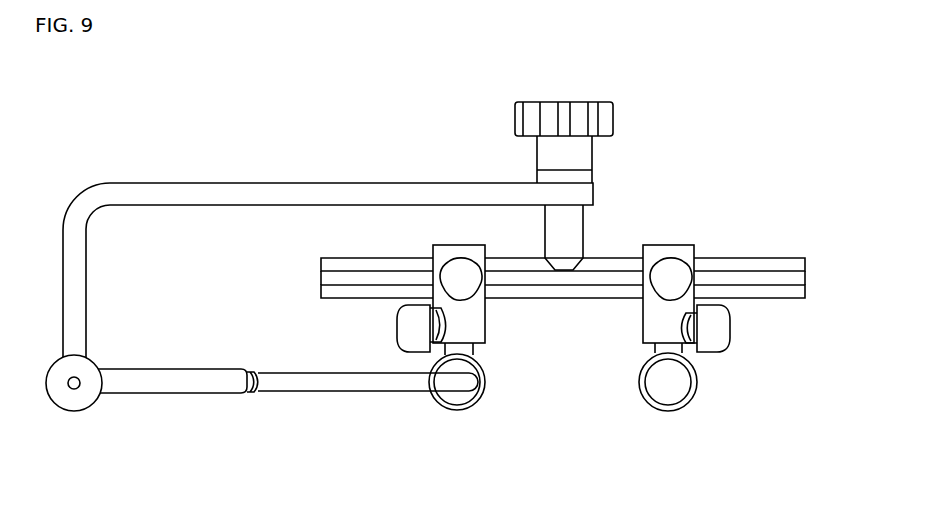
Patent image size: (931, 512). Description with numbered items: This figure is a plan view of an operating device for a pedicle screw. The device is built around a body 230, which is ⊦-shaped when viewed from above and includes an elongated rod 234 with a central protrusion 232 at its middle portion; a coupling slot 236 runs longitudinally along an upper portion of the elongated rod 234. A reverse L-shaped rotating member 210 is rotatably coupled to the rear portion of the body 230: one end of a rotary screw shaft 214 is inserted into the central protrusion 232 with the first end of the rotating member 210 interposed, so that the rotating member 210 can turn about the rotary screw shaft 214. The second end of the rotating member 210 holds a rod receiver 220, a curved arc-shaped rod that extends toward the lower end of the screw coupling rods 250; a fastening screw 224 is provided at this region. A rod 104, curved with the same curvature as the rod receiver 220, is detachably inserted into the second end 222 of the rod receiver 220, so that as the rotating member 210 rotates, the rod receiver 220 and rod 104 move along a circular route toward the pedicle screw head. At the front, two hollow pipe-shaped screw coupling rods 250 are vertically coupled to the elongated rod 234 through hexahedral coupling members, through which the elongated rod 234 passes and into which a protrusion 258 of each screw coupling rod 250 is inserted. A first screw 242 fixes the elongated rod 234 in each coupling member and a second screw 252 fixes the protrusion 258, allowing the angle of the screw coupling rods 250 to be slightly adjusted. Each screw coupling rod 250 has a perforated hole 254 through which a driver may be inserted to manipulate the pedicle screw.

The rod 104 is at (352, 388).
The rotating member 210 is at (232, 193).
The rotary screw shaft 214 is at (573, 107).
The rod receiver 220 is at (175, 396).
The second end of the rod receiver 222 is at (255, 394).
The fastening screw 224 is at (72, 408).
The body 230 is at (586, 258).
The central protrusion 232 is at (567, 230).
The elongated rod 234 is at (788, 258).
The coupling slot 236 is at (787, 279).
The first screw 242 is at (455, 257).
The screw coupling rod 250 is at (463, 412).
The second screw 252 is at (408, 330).
The perforated hole 254 is at (462, 368).
The protrusion 258 is at (468, 348).